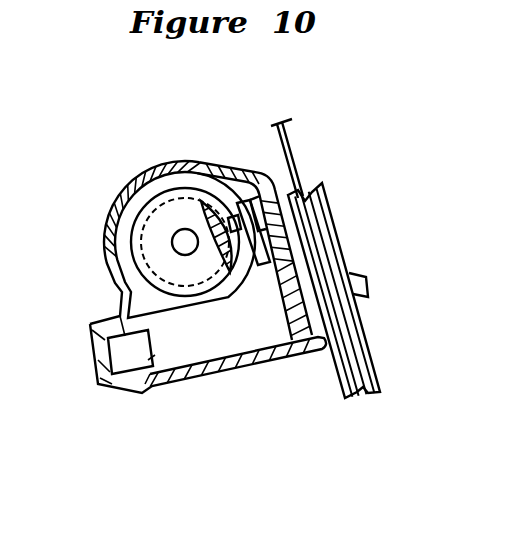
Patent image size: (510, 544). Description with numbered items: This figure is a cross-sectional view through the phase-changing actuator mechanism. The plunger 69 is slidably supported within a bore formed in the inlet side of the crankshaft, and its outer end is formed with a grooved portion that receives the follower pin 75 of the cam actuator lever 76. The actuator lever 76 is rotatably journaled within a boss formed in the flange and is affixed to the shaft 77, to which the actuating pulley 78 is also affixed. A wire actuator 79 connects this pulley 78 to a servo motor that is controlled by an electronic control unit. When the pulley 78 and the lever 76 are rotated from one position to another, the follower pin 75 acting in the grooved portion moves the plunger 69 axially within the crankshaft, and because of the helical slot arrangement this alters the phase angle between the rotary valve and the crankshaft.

The plunger 69 is at (133, 218).
The follower pin 75 is at (233, 228).
The cam actuator lever 76 is at (173, 340).
The shaft 77 is at (352, 275).
The actuating pulley 78 is at (324, 200).
The wire actuator 79 is at (302, 155).